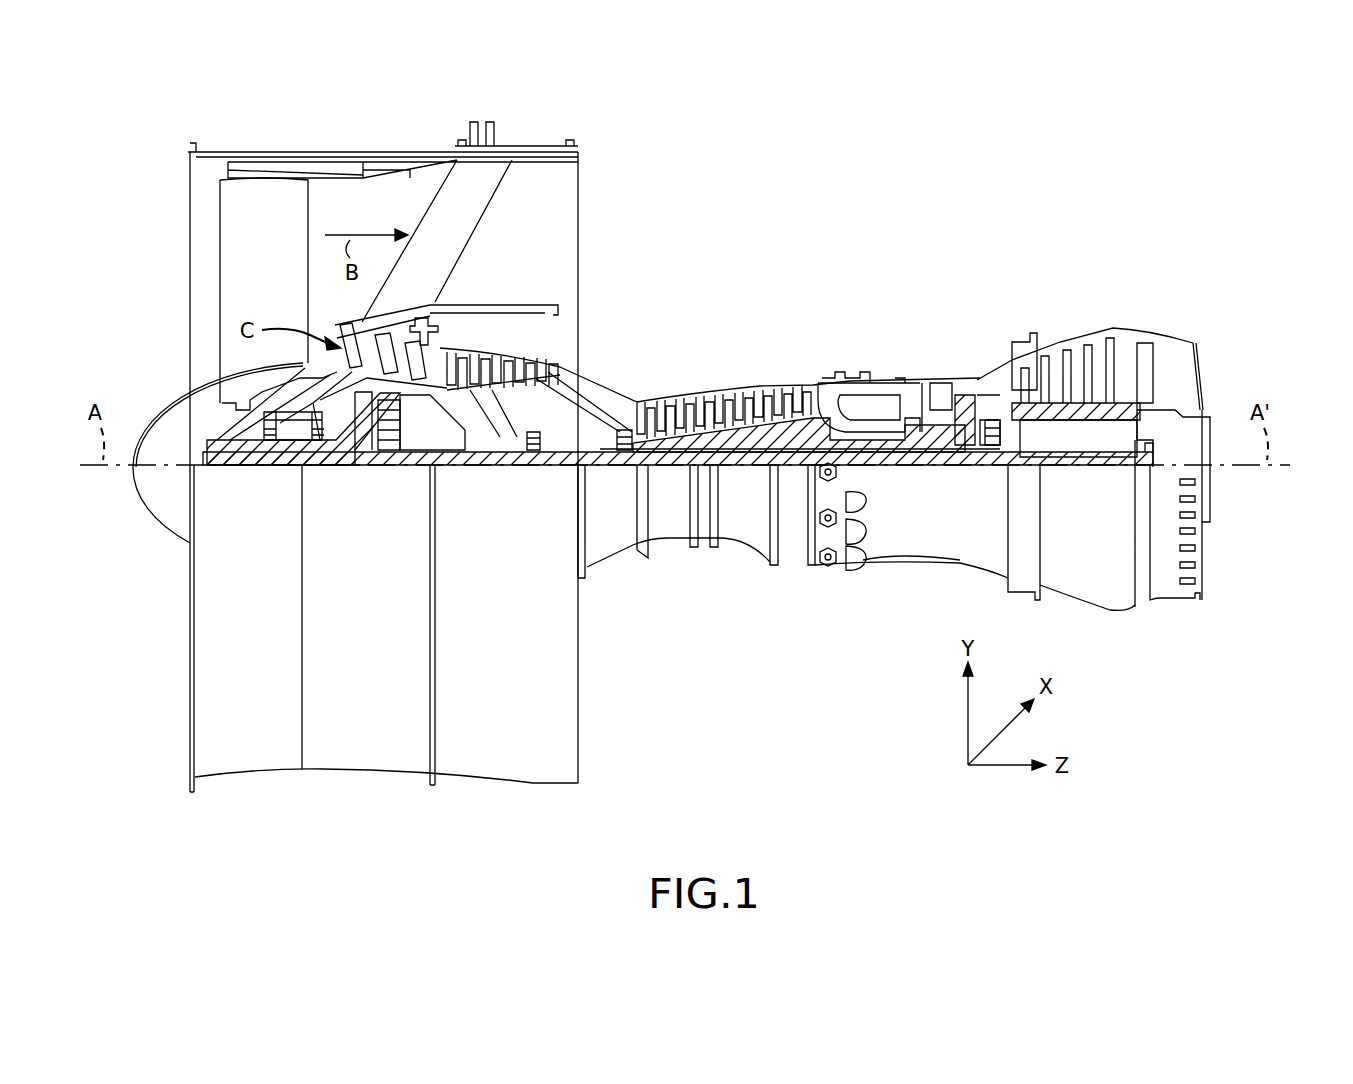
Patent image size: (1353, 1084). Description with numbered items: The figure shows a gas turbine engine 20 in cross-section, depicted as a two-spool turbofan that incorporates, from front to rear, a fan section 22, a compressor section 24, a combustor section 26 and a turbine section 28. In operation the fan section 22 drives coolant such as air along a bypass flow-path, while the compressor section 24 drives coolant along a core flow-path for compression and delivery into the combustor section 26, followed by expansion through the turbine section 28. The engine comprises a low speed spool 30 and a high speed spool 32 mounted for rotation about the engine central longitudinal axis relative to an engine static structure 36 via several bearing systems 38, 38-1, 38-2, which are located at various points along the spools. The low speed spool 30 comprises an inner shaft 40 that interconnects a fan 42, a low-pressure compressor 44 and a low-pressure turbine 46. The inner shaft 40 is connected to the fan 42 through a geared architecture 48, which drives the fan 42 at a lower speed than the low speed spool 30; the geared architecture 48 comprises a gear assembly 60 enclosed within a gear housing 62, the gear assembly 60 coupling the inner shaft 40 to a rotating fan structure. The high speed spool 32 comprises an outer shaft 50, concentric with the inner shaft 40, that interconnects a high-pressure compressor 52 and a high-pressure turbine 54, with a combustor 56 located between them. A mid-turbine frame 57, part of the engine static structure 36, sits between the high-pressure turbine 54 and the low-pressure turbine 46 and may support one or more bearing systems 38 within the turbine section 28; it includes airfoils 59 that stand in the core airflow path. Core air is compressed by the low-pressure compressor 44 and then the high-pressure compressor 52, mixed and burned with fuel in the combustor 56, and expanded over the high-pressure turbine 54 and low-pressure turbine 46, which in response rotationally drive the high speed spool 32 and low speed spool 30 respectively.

The gas turbine engine 20 is at (917, 193).
The fan section 22 is at (430, 127).
The compressor section 24 is at (437, 266).
The combustor section 26 is at (815, 266).
The turbine section 28 is at (1140, 266).
The low speed spool 30 is at (752, 470).
The high speed spool 32 is at (779, 438).
The engine static structure 36 is at (915, 540).
The bearing system 38 is at (984, 472).
The bearing system 38-1 is at (278, 447).
The bearing system 38-2 is at (528, 448).
The inner shaft 40 is at (600, 468).
The fan 42 is at (273, 280).
The low-pressure compressor 44 is at (510, 360).
The low-pressure turbine 46 is at (1078, 365).
The geared architecture 48 is at (393, 468).
The outer shaft 50 is at (857, 450).
The high-pressure compressor 52 is at (724, 438).
The high-pressure turbine 54 is at (940, 380).
The combustor 56 is at (875, 413).
The mid-turbine frame 57 is at (976, 382).
The airfoils 59 is at (990, 380).
The gear assembly 60 is at (398, 446).
The gear housing 62 is at (405, 414).